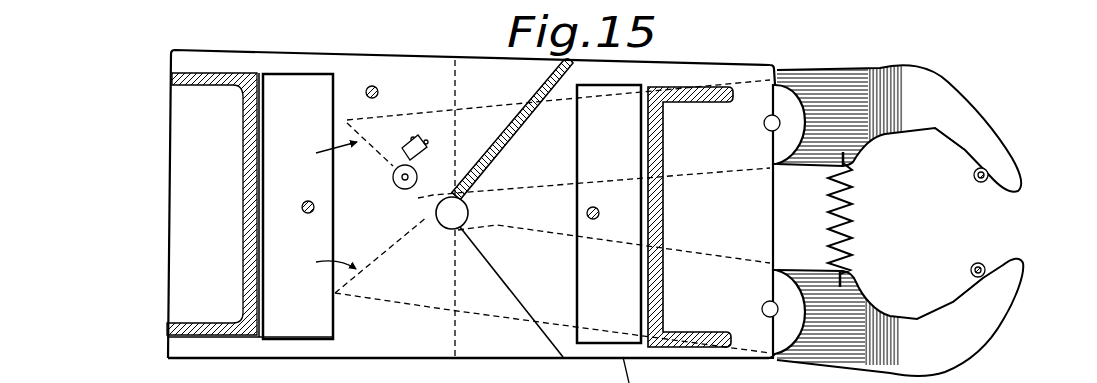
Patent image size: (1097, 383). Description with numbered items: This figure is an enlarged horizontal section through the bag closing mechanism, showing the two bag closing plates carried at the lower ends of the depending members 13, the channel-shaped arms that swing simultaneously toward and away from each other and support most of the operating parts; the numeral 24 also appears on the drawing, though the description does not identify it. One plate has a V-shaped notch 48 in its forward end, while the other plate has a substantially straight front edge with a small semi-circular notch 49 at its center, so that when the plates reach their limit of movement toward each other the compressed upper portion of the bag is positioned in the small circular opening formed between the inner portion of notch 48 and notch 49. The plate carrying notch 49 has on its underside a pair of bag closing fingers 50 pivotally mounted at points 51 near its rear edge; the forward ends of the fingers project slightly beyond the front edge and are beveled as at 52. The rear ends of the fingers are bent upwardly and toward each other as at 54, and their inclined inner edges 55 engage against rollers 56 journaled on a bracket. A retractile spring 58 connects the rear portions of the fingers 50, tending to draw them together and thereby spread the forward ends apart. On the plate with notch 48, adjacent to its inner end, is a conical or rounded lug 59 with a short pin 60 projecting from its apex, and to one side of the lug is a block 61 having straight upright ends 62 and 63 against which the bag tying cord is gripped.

The depending members 13 is at (243, 202).
The base 24 is at (383, 347).
The V-shaped notch 48 is at (510, 296).
The semi-circular notch 49 is at (470, 213).
The bag closing fingers 50 is at (793, 270).
The pivot points 51 is at (764, 123).
The beveled forward ends 52 is at (318, 211).
The upwardly bent rear ends 54 is at (995, 137).
The inclined inner edges 55 is at (960, 150).
The rollers 56 is at (983, 264).
The retractile spring 58 is at (852, 228).
The conical lug 59 is at (402, 188).
The short pin 60 is at (413, 172).
The block 61 is at (412, 137).
The upright end 62 is at (402, 153).
The upright end 63 is at (427, 142).